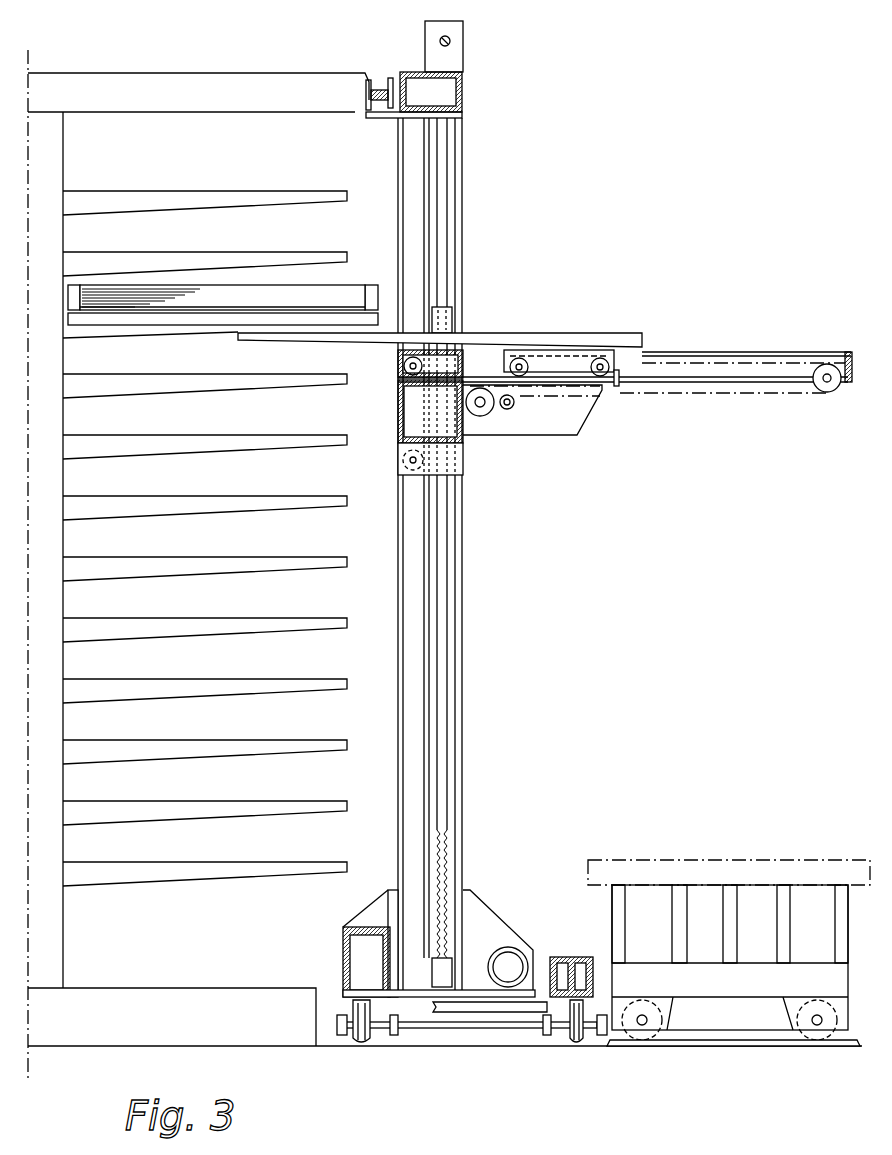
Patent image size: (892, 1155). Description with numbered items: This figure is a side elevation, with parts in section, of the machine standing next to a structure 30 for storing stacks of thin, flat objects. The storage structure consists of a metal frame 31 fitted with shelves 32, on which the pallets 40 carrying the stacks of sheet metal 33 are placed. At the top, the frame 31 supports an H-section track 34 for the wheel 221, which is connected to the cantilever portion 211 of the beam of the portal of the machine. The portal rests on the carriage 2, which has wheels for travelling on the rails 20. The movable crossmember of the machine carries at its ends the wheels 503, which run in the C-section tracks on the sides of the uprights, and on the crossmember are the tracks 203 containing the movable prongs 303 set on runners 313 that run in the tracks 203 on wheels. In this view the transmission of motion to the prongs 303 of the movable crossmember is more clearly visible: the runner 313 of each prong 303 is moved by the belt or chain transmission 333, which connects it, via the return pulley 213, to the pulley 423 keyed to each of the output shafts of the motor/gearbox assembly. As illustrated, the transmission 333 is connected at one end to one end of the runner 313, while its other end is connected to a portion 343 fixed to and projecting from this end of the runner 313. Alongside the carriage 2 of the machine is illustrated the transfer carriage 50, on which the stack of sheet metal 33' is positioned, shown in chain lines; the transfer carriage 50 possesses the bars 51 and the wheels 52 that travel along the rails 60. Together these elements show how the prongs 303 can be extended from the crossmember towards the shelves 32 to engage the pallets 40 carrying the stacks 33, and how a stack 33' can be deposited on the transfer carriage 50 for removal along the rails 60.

The carriage 2 is at (385, 892).
The rails 20 is at (358, 1046).
The structure for storing stacks 30 is at (166, 72).
The metal frame 31 is at (52, 156).
The shelves 32 is at (215, 196).
The stack of sheet metal 33 is at (227, 266).
The stack of sheet metal 33' is at (729, 842).
The H-section track 34 is at (370, 88).
The pallets 40 is at (180, 320).
The transfer carriage 50 is at (752, 962).
The bars 51 is at (846, 917).
The wheels 52 is at (800, 1018).
The rails 60 is at (688, 1047).
The tracks 203 is at (848, 352).
The cantilever portion 211 is at (377, 120).
The return pulley 213 is at (828, 393).
The wheel 221 is at (363, 103).
The movable prongs 303 is at (530, 333).
The runners 313 is at (575, 360).
The belt or chain transmission 333 is at (690, 394).
The portion fixed to the runner 343 is at (620, 388).
The pulleys 423 is at (483, 412).
The wheels 503 is at (398, 461).